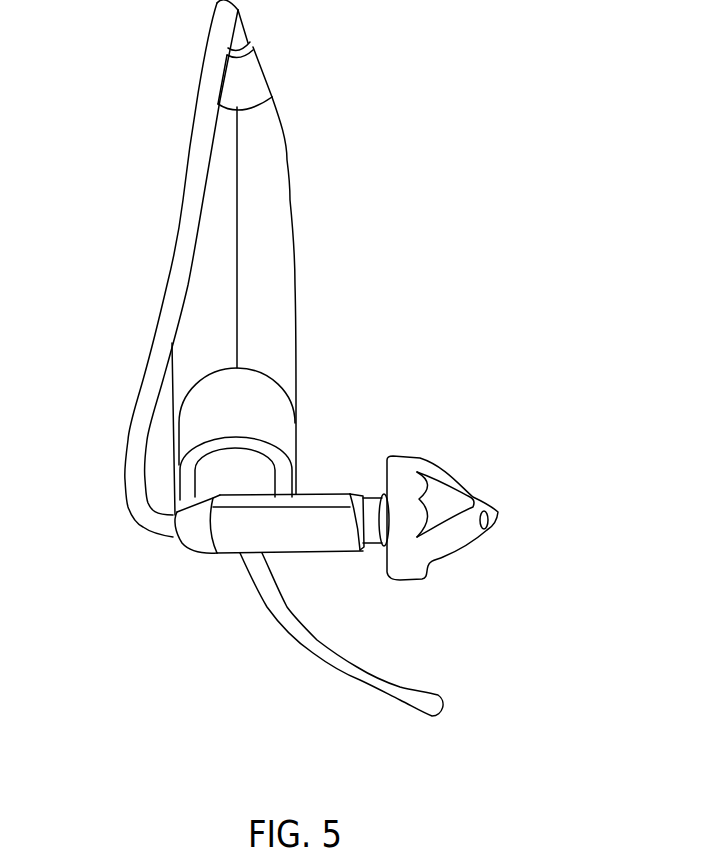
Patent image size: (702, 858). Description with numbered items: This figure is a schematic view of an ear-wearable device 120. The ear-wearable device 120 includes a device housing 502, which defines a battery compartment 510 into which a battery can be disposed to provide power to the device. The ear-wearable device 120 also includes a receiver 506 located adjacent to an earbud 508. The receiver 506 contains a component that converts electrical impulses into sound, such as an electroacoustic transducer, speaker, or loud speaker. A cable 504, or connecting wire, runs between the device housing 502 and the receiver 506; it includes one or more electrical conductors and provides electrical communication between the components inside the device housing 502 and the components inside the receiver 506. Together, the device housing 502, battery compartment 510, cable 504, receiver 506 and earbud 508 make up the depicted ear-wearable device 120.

The ear-wearable device 120 is at (352, 129).
The device housing 502 is at (272, 247).
The cable 504 is at (180, 275).
The receiver 506 is at (313, 518).
The earbud 508 is at (473, 530).
The battery compartment 510 is at (252, 473).